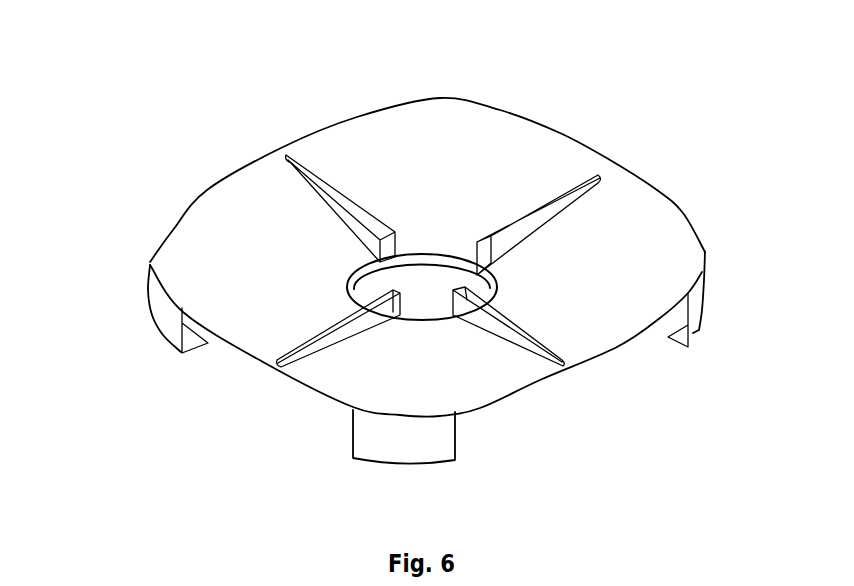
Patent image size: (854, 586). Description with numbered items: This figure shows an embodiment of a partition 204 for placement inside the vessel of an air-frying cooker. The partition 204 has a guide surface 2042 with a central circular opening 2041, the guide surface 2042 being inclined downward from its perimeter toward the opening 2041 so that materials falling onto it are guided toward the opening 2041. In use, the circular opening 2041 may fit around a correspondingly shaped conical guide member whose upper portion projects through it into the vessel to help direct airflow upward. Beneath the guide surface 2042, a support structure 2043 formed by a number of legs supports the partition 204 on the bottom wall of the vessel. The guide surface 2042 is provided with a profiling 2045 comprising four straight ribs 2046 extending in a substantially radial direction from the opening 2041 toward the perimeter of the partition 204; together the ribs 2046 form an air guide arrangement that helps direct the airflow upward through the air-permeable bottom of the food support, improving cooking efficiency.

The partition 204 is at (195, 117).
The opening 2041 is at (425, 282).
The guide surface 2042 is at (627, 220).
The support structure 2043 is at (402, 433).
The profiling 2045 is at (305, 222).
The ribs 2046 is at (353, 328).